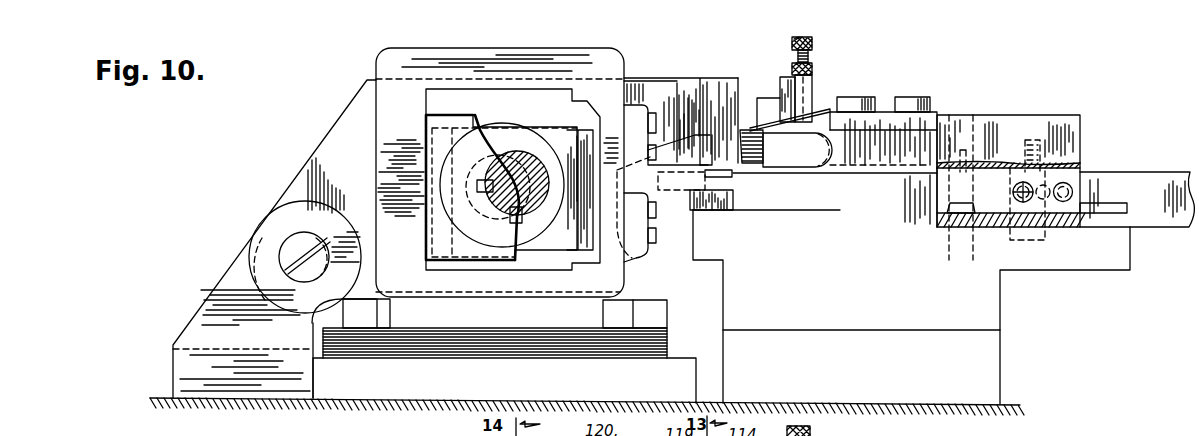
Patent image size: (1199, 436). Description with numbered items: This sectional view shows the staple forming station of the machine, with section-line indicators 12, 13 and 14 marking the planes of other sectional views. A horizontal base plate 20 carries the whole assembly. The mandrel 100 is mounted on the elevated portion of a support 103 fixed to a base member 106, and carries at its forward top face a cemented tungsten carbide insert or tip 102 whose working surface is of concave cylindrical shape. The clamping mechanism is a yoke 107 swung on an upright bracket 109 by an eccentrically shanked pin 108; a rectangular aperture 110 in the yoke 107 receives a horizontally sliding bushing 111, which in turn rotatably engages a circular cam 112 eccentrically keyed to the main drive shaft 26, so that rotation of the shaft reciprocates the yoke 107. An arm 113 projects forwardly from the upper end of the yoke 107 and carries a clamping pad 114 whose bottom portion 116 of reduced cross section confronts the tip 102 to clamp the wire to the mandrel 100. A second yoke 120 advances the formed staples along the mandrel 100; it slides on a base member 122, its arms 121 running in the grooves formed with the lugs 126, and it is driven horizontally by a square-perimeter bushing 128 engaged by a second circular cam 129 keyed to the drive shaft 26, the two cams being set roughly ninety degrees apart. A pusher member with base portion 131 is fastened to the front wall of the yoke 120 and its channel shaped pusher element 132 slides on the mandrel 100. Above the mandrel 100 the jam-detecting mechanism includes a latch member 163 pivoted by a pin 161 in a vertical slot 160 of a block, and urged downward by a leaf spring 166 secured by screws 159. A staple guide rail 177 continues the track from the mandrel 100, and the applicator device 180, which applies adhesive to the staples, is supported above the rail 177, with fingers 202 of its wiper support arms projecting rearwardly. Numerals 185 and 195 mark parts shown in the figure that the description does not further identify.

The section line 14 is at (542, 36).
The second yoke member 120 is at (616, 44).
The section line 13 is at (702, 63).
The arm 113 is at (700, 78).
The clamping member or pad 114 is at (738, 80).
The latch member 163 is at (747, 140).
The section line 12 is at (835, 53).
The screws 159 is at (870, 97).
The leaf spring 166 is at (820, 112).
The applicator device 180 is at (1066, 87).
The yoke 107 is at (352, 163).
The circular cam 129 is at (487, 109).
The circular cam 112 is at (505, 148).
The main drive shaft 26 is at (521, 163).
The bushing 111 is at (591, 124).
The screw 195 is at (648, 146).
The bottom portion 116 is at (710, 162).
The pin 161 is at (805, 148).
The staple guide rail 177 is at (1133, 161).
The pin 108 is at (318, 222).
The insert or tip 102 is at (706, 179).
The pusher element 132 is at (694, 187).
The stop member 185 is at (777, 188).
The vertical longitudinal slot 160 is at (820, 174).
The fingers 202 is at (1140, 198).
The bushing 128 is at (432, 231).
The rectangular aperture 110 is at (583, 221).
The base portion 131 is at (637, 229).
The mandrel 100 is at (766, 212).
The upright bracket 109 is at (262, 327).
The arms 121 is at (333, 337).
The lugs 126 is at (362, 320).
The support 103 is at (845, 290).
The base member 106 is at (840, 374).
The horizontal base plate 20 is at (867, 392).
The base member 122 is at (524, 390).